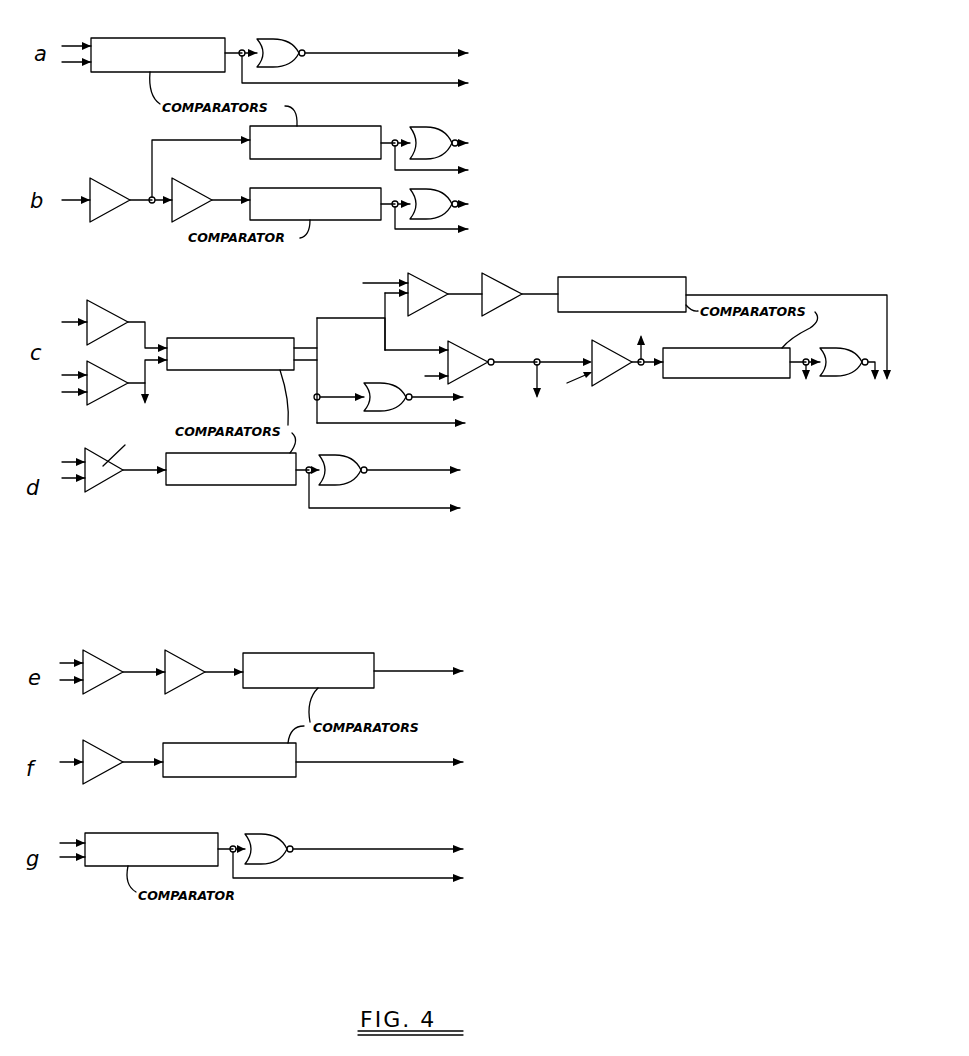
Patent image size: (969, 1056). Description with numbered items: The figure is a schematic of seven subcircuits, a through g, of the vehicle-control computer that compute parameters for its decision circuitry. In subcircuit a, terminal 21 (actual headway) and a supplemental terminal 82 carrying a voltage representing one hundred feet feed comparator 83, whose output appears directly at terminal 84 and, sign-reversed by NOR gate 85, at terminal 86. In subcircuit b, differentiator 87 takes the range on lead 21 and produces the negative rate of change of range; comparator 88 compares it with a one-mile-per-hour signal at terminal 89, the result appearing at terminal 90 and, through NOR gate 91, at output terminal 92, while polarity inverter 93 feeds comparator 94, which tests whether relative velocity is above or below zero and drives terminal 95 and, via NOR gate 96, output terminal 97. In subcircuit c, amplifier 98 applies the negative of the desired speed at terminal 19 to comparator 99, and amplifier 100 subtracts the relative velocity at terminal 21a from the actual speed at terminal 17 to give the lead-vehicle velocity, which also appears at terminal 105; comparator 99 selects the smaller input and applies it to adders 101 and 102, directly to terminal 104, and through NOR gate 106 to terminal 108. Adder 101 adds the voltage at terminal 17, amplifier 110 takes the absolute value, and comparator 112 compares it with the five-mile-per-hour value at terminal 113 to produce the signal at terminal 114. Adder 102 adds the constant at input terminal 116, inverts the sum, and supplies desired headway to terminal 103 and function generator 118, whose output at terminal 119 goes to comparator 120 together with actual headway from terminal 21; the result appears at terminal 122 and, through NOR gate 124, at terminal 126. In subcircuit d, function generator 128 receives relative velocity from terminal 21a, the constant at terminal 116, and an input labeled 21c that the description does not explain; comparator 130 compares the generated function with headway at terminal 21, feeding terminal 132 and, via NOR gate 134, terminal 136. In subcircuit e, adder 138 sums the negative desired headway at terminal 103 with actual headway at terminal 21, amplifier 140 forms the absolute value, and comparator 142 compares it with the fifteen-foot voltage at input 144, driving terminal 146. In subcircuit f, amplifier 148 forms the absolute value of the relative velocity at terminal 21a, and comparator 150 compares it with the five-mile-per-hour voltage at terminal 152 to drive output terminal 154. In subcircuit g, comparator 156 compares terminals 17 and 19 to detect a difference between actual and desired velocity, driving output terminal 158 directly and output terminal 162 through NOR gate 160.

The terminal 17 is at (70, 375).
The terminal 19 is at (68, 322).
The terminal 21 is at (72, 46).
The terminal 21a is at (62, 393).
The input signal line 21c is at (65, 481).
The supplemental terminal 82 is at (72, 62).
The comparator 83 is at (174, 55).
The terminal 84 is at (460, 83).
The NOR gate 85 is at (286, 50).
The terminal 86 is at (456, 54).
The differentiator 87 is at (104, 196).
The comparator 88 is at (281, 161).
The terminal 89 is at (249, 155).
The terminal 90 is at (462, 172).
The NOR gate 91 is at (430, 140).
The output terminal 92 is at (462, 146).
The polarity inverter 93 is at (190, 198).
The comparator 94 is at (330, 204).
The terminal 95 is at (462, 232).
The NOR gate 96 is at (438, 202).
The output terminal 97 is at (462, 207).
The amplifier 98 is at (100, 328).
The comparator 99 is at (307, 356).
The amplifier 100 is at (98, 380).
The adder 101 is at (422, 292).
The adder 102 is at (466, 362).
The terminal 103 is at (535, 398).
The terminal 104 is at (458, 425).
The terminal 105 is at (152, 401).
The NOR gate 106 is at (374, 396).
The terminal 108 is at (458, 400).
The amplifier 110 is at (500, 292).
The comparator 112 is at (622, 294).
The terminal 113 is at (558, 311).
The terminal 114 is at (884, 384).
The input terminal 116 is at (425, 376).
The function generator 118 is at (605, 376).
The terminal 119 is at (643, 338).
The comparator 120 is at (741, 363).
The terminal 122 is at (804, 384).
The NOR gate 124 is at (838, 356).
The terminal 126 is at (872, 384).
The function generator 128 is at (116, 456).
The comparator 130 is at (221, 469).
The terminal 132 is at (455, 510).
The NOR gate 134 is at (348, 468).
The terminal 136 is at (455, 472).
The adder 138 is at (102, 672).
The amplifier 140 is at (182, 668).
The comparator 142 is at (308, 670).
The input 144 is at (241, 687).
The terminal 146 is at (456, 672).
The amplifier 148 is at (100, 756).
The comparator 150 is at (229, 760).
The terminal 152 is at (163, 777).
The output terminal 154 is at (456, 763).
The comparator 156 is at (165, 849).
The output terminal 158 is at (456, 879).
The NOR gate 160 is at (282, 848).
The output terminal 162 is at (456, 850).